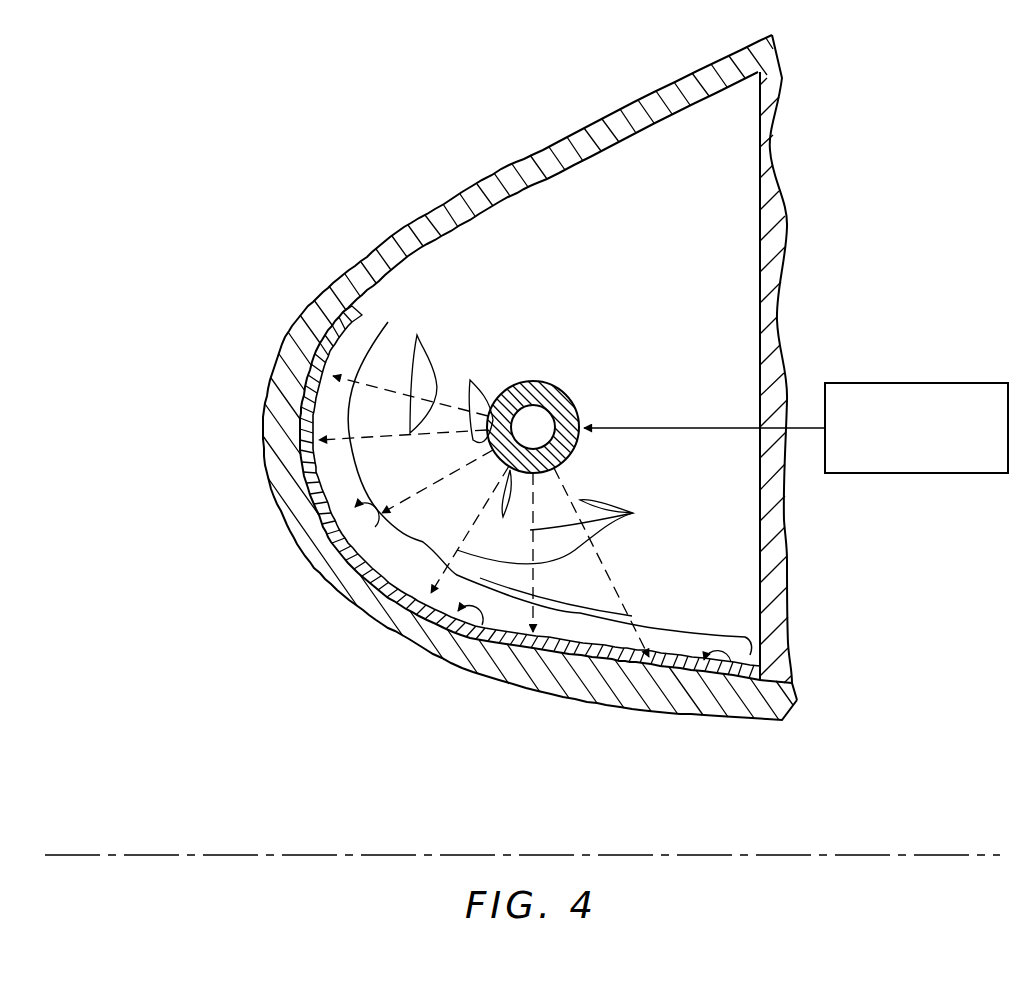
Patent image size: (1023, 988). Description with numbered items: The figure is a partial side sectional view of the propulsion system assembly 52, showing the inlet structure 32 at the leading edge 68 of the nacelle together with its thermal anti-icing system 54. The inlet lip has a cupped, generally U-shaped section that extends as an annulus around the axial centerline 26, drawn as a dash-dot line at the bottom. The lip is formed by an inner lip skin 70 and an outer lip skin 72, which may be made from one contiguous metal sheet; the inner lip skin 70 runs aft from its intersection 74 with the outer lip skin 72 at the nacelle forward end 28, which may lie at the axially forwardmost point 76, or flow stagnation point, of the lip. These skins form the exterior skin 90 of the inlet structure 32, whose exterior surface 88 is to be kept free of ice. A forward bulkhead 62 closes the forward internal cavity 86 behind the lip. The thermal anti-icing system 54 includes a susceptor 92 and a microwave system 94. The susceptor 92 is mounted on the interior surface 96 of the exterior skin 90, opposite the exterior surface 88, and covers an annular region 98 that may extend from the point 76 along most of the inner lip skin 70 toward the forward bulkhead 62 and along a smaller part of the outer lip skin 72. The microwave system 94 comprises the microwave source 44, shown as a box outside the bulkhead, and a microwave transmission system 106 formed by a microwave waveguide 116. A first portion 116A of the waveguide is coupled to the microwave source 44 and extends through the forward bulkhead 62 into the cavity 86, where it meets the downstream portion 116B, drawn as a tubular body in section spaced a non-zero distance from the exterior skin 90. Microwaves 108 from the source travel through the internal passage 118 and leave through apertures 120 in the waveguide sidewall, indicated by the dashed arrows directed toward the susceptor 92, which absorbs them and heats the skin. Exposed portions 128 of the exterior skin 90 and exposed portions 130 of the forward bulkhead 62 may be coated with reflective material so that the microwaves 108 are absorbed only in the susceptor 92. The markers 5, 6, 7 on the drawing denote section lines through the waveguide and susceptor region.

The axial centerline 26 is at (990, 850).
The nacelle forward end 28 is at (422, 377).
The inlet structure 32 is at (565, 99).
The microwave source 44 is at (948, 382).
The propulsion system assembly 52 is at (379, 125).
The thermal anti-icing system 54 is at (839, 268).
The forward bulkhead 62 is at (794, 557).
The leading edge 68 is at (422, 377).
The inner lip skin 70 is at (517, 691).
The outer lip skin 72 is at (515, 147).
The intersection 74 is at (422, 377).
The axially forwardmost point 76 is at (258, 431).
The forward internal cavity 86 is at (602, 251).
The exterior surface 88 is at (413, 645).
The exterior skin 90 is at (360, 617).
The susceptor 92 is at (726, 668).
The microwave system 94 is at (855, 328).
The interior surface 96 is at (477, 627).
The covered region 98 is at (425, 553).
The microwave transmission system 106 is at (623, 388).
The microwaves 108 is at (270, 540).
The microwave waveguide 116 is at (604, 379).
The first portion of the microwave waveguide 116A is at (699, 421).
The downstream portion of the microwave waveguide 116B is at (559, 380).
The internal passage 118 is at (534, 420).
The apertures 120 is at (628, 455).
The exposed portion of the exterior skin 128 is at (527, 196).
The exposed portion of the forward bulkhead 130 is at (757, 209).
The section line FIG. 5 is at (562, 680).
The section line FIG. 6 is at (562, 680).
The section line FIG. 7 is at (580, 643).